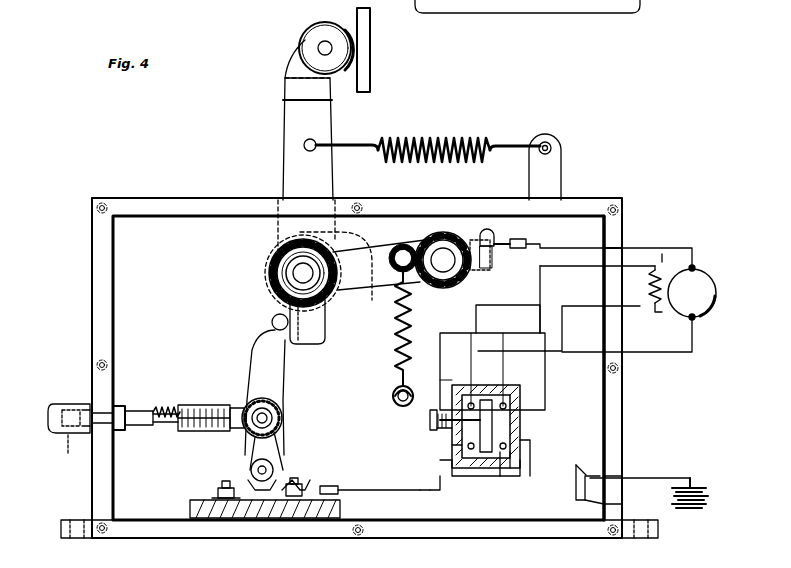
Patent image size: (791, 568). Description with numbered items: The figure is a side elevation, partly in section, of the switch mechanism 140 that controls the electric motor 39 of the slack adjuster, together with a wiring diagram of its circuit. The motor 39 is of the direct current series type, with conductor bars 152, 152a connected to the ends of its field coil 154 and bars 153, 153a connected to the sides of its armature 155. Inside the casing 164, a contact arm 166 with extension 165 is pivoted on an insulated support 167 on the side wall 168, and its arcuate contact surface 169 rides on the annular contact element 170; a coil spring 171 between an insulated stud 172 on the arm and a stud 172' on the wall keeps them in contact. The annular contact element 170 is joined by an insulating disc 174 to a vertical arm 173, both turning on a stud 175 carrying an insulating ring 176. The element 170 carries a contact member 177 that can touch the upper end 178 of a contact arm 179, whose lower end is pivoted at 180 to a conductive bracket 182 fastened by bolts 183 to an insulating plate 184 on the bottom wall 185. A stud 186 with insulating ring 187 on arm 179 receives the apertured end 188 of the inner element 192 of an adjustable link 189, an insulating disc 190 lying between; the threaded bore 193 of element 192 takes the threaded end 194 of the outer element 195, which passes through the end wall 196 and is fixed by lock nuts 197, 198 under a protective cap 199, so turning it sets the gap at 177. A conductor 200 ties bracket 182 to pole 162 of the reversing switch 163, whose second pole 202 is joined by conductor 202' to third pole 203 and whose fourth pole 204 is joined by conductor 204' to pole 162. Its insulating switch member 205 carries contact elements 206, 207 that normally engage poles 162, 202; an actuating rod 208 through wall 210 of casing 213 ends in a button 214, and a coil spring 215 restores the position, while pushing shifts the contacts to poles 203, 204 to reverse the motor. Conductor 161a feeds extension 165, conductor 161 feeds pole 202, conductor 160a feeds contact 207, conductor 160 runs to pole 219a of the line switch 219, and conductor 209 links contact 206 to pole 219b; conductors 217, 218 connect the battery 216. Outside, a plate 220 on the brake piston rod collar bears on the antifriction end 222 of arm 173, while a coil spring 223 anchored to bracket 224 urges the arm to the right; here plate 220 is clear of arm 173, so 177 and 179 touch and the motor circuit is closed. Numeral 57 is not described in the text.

The electric motor 39 is at (672, 257).
The housing 57 is at (467, 8).
The switch mechanism 140 is at (240, 169).
The conductor bar 152 is at (660, 308).
The conductor bar 152a is at (656, 268).
The conductor bar 153 is at (695, 318).
The conductor bar 153a is at (694, 268).
The field coil 154 is at (648, 284).
The armature 155 is at (692, 293).
The conductor 160 is at (600, 312).
The conductor 160a is at (563, 268).
The conductor 161 is at (668, 352).
The conductor 161a is at (636, 248).
The pole 162 is at (452, 468).
The reversing switch 163 is at (492, 371).
The casing 164 is at (622, 198).
The extension 165 is at (485, 240).
The contact arm 166 is at (379, 264).
The insulated support 167 is at (463, 278).
The side wall 168 is at (168, 226).
The arcuate contact surface 169 is at (290, 248).
The annular contact element 170 is at (278, 258).
The coil spring 171 is at (412, 308).
The insulated stud 172 is at (408, 246).
The stud 172' is at (382, 390).
The vertical arm 173 is at (286, 126).
The disc 174 is at (280, 280).
The stud 175 is at (310, 273).
The ring 176 is at (330, 290).
The contact member 177 is at (320, 316).
The upper end 178 is at (280, 314).
The contact arm 179 is at (250, 354).
The pivot 180 is at (250, 468).
The bracket 182 is at (248, 486).
The bolts 183 is at (216, 490).
The plate 184 is at (262, 516).
The bottom wall 185 is at (137, 530).
The stud 186 is at (271, 408).
The ring 187 is at (268, 418).
The inner apertured end 188 is at (280, 428).
The adjustable link 189 is at (168, 410).
The disc 190 is at (283, 442).
The inner element 192 is at (218, 430).
The internally threaded bore 193 is at (208, 410).
The threaded end 194 is at (165, 428).
The outer element 195 is at (135, 412).
The end wall 196 is at (92, 277).
The lock nut 197 is at (43, 453).
The lock nut 198 is at (122, 430).
The protective cap 199 is at (58, 404).
The conductor 200 is at (372, 475).
The pole 202 is at (446, 420).
The conductor 202' is at (510, 328).
The pole 203 is at (524, 462).
The pole 204 is at (501, 426).
The conductor 204' is at (504, 477).
The switch member 205 is at (490, 396).
The contact element 206 is at (522, 480).
The contact element 207 is at (505, 400).
The actuating rod 208 is at (452, 444).
The conductor 209 is at (536, 532).
The wall 210 is at (455, 475).
The casing 213 is at (420, 490).
The head or button 214 is at (430, 425).
The coil spring 215 is at (440, 432).
The battery 216 is at (712, 496).
The conductor 217 is at (645, 478).
The conductor 218 is at (665, 512).
The line switch 219 is at (600, 492).
The pole 219a is at (580, 470).
The pole 219b is at (570, 510).
The plate 220 is at (371, 65).
The upper antifriction end 222 is at (320, 22).
The coil spring 223 is at (428, 125).
The bracket 224 is at (553, 165).